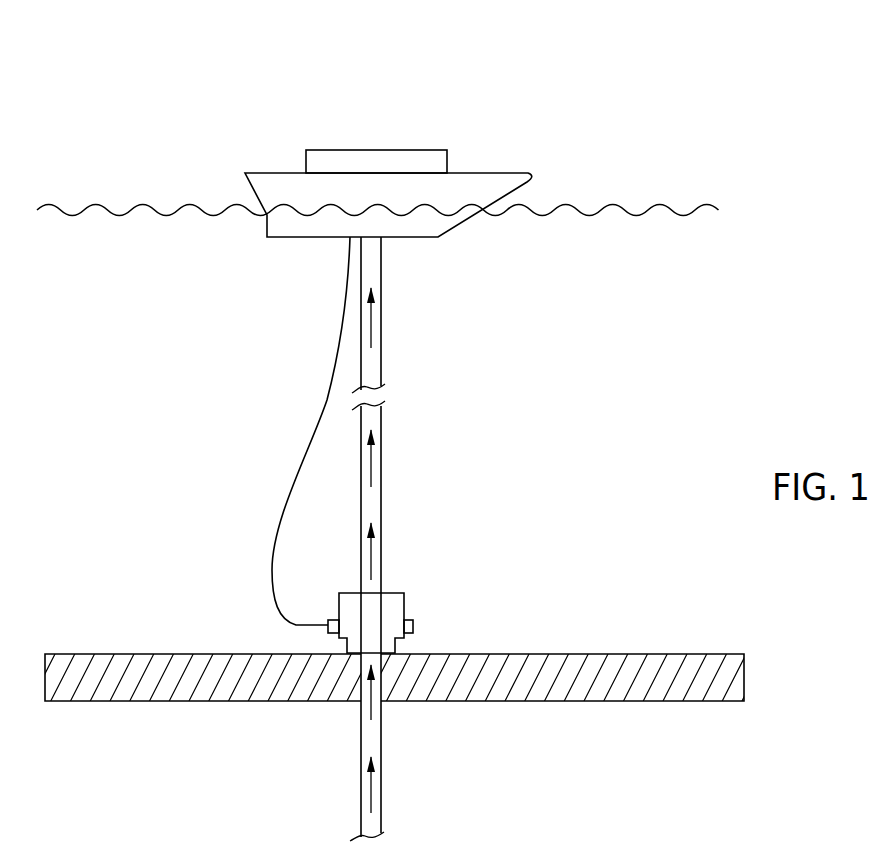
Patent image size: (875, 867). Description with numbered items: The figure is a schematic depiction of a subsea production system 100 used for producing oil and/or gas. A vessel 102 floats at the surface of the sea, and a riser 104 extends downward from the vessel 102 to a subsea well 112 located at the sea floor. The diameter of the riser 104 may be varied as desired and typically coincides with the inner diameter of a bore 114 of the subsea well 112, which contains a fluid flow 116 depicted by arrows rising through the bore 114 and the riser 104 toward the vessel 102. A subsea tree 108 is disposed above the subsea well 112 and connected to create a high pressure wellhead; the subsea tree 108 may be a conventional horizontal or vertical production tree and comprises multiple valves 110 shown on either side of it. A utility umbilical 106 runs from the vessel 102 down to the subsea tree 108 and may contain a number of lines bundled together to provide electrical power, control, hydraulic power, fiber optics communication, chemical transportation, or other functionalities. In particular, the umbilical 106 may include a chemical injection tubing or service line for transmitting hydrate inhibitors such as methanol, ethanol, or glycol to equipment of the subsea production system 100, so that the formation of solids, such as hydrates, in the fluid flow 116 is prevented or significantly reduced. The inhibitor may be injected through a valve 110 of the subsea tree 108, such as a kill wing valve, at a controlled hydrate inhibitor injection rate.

The subsea production system 100 is at (645, 98).
The vessel 102 is at (503, 173).
The riser 104 is at (382, 317).
The umbilical 106 is at (331, 386).
The subsea tree 108 is at (404, 602).
The valves 110 is at (332, 618).
The subsea well 112 is at (345, 743).
The bore 114 is at (382, 738).
The fluid flow 116 is at (373, 475).